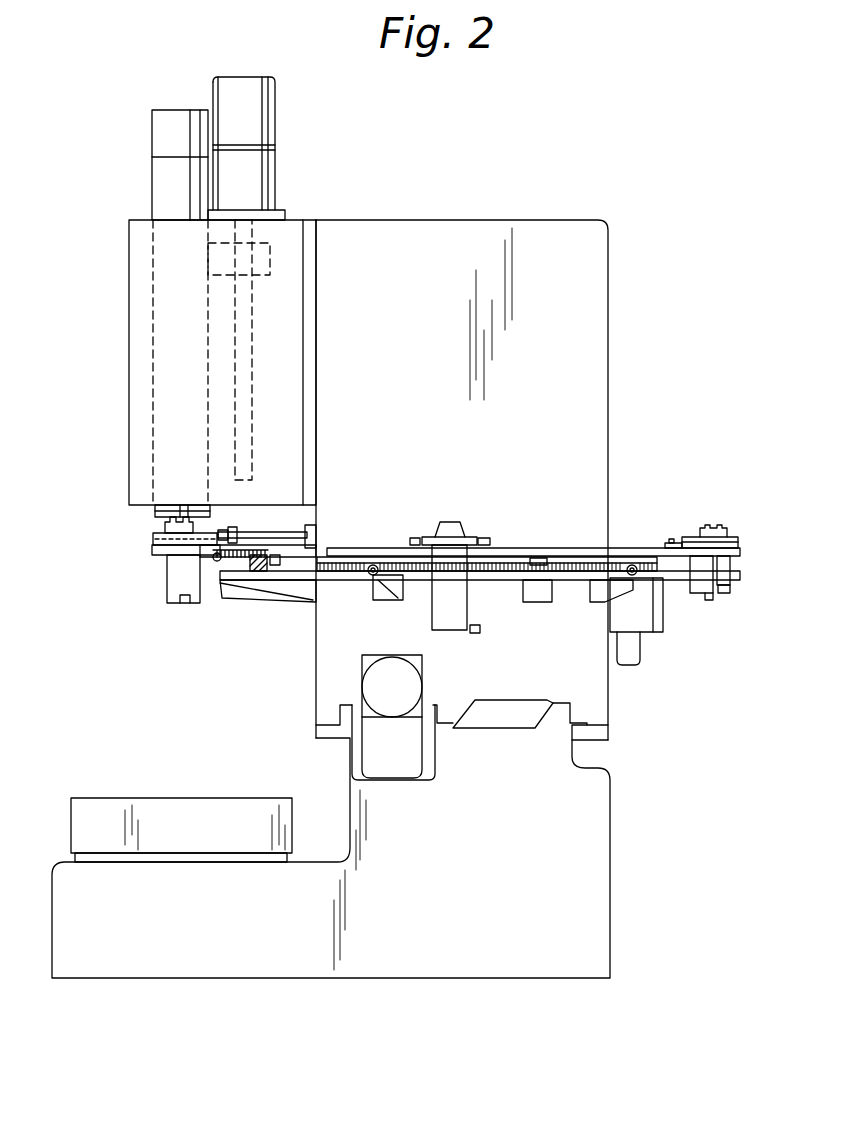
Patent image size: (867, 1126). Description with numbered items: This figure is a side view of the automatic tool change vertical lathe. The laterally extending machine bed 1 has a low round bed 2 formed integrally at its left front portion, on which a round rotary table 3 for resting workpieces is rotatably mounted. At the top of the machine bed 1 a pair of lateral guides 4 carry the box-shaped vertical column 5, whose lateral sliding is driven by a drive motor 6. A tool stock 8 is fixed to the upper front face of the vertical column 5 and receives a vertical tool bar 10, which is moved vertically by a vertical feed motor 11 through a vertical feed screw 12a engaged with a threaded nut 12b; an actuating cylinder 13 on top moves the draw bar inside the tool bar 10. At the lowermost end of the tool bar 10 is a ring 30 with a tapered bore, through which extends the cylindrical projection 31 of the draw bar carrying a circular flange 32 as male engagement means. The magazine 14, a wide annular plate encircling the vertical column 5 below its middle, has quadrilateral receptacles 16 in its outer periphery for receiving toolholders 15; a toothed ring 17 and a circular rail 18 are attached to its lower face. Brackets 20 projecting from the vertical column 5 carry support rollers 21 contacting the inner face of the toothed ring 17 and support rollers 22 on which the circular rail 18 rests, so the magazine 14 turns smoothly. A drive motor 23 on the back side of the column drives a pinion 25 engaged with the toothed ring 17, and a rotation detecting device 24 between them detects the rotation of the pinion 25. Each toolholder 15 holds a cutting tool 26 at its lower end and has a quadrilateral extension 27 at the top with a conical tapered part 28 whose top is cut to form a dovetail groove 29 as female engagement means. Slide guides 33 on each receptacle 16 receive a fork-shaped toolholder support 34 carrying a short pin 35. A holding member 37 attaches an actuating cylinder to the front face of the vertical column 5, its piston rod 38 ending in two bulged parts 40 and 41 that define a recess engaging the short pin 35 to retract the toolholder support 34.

The machine bed 1 is at (476, 879).
The low round bed 2 is at (213, 978).
The round rotary table 3 is at (213, 810).
The lateral guides 4 is at (437, 712).
The vertical column 5 is at (455, 220).
The drive motor 6 is at (370, 683).
The tool stock 8 is at (129, 264).
The vertical tool bar 10 is at (160, 188).
The vertical feed motor 11 is at (262, 108).
The vertical feed screw 12a is at (248, 326).
The threaded nut 12b is at (270, 265).
The actuating cylinder 13 is at (160, 131).
The magazine 14 is at (355, 548).
The toolholder 15 is at (172, 590).
The quadrilateral receptacles 16 is at (152, 552).
The toothed ring 17 is at (343, 568).
The circular rail 18 is at (386, 548).
The brackets 20 is at (262, 585).
The support roller 21 is at (277, 560).
The support roller 22 is at (215, 562).
The drive motor 23 is at (640, 655).
The rotation detecting device 24 is at (648, 622).
The pinion 25 is at (663, 567).
The cutting tool 26 is at (185, 600).
The quadrilateral extension 27 is at (152, 540).
The conical tapered part 28 is at (168, 520).
The dovetail groove 29 is at (705, 525).
The ring 30 is at (155, 511).
The cylindrical projection 31 is at (178, 530).
The circular flange 32 is at (165, 556).
The slide guides 33 is at (730, 580).
The toolholder support 34 is at (668, 545).
The short pin 35 is at (225, 533).
The holding member 37 is at (313, 530).
The piston rod 38 is at (292, 530).
The bulged part 40 is at (220, 535).
The bulged part 41 is at (246, 530).